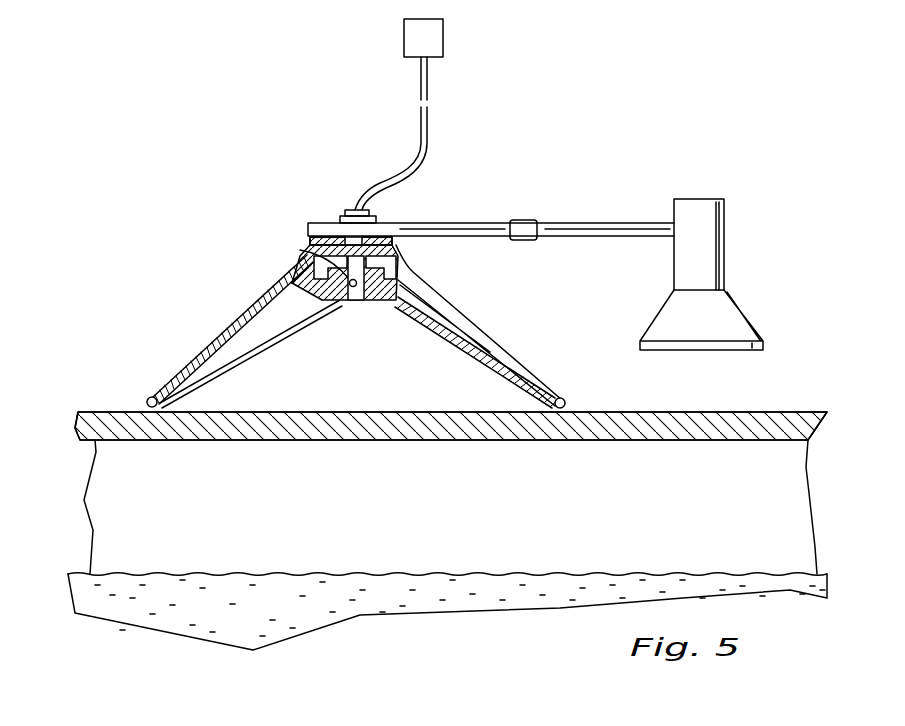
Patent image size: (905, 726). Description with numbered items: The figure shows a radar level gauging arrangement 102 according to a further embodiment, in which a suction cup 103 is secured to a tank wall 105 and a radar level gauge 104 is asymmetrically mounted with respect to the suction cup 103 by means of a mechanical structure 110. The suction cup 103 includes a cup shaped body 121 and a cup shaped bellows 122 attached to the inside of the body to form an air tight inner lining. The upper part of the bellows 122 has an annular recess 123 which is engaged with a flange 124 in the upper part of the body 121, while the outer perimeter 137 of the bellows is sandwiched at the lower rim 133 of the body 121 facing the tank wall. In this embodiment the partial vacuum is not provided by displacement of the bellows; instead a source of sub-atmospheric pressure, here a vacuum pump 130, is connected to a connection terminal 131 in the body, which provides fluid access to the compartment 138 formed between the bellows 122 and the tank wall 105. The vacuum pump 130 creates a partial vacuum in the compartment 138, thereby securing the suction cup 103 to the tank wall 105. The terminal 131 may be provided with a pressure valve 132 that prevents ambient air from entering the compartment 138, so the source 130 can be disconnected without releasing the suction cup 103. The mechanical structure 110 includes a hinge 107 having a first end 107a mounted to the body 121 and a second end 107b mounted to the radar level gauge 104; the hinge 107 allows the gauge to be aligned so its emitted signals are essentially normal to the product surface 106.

The arrangement 102 is at (337, 104).
The suction cup 103 is at (228, 246).
The radar level gauge 104 is at (680, 200).
The tank wall 105 is at (638, 443).
The product surface 106 is at (516, 574).
The hinge 107 is at (530, 240).
The first end 107a is at (462, 232).
The second end 107b is at (606, 237).
The mechanical structure 110 is at (521, 178).
The cup shaped body 121 is at (470, 322).
The cup shaped bellows 122 is at (485, 350).
The annular recess 123 is at (356, 288).
The flange 124 is at (262, 306).
The vacuum pump 130 is at (440, 40).
The connection terminal 131 is at (372, 210).
The pressure valve 132 is at (300, 250).
The lower rim 133 is at (150, 398).
The outer perimeter 137 is at (160, 412).
The compartment 138 is at (367, 388).